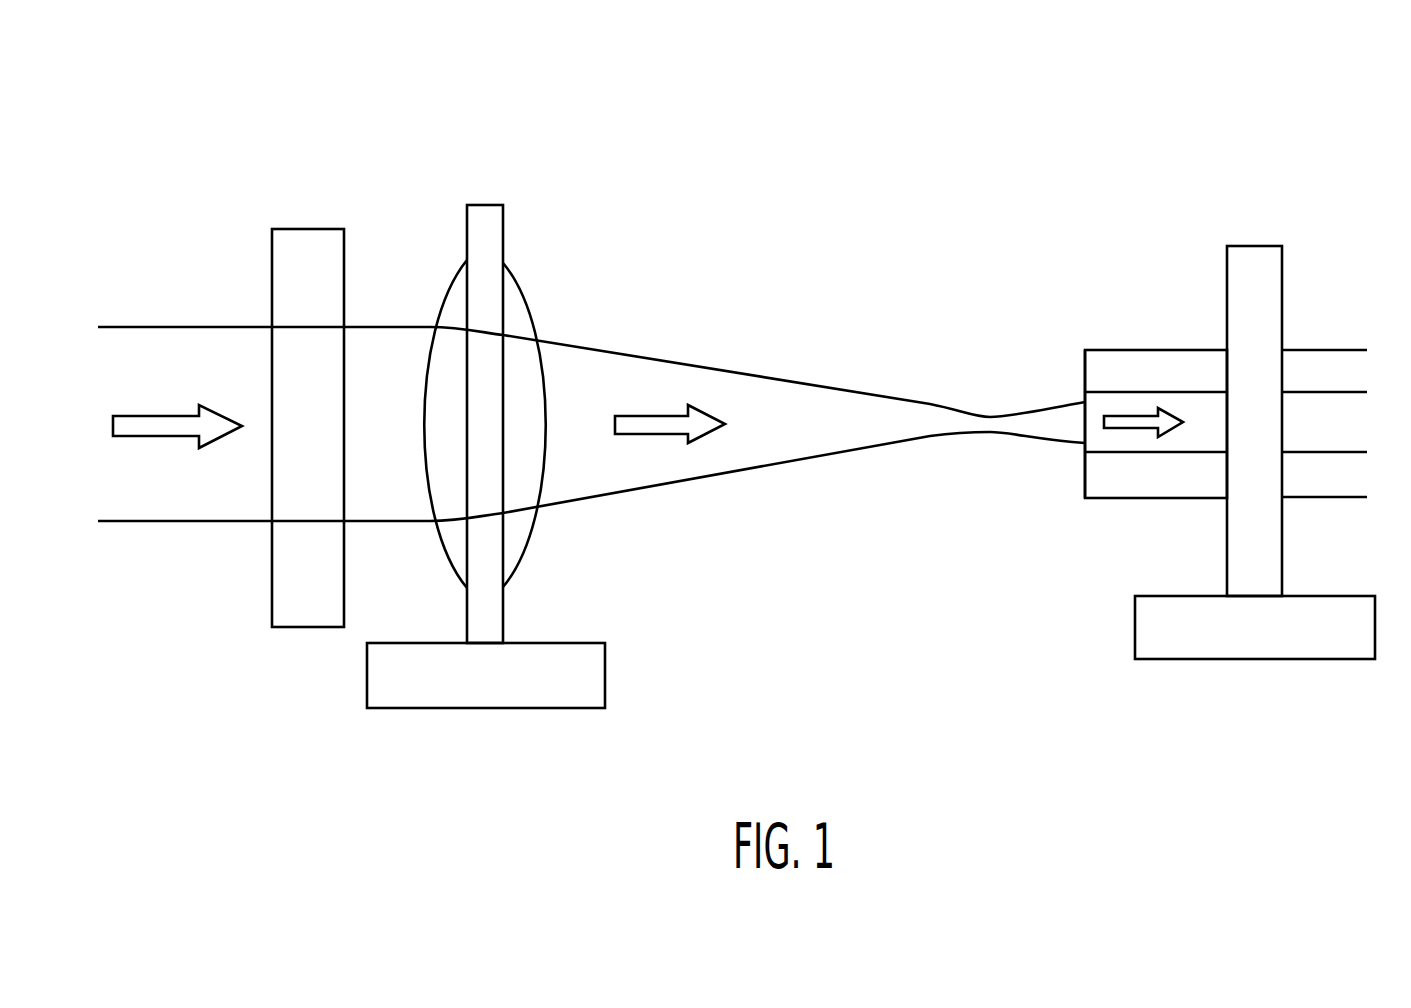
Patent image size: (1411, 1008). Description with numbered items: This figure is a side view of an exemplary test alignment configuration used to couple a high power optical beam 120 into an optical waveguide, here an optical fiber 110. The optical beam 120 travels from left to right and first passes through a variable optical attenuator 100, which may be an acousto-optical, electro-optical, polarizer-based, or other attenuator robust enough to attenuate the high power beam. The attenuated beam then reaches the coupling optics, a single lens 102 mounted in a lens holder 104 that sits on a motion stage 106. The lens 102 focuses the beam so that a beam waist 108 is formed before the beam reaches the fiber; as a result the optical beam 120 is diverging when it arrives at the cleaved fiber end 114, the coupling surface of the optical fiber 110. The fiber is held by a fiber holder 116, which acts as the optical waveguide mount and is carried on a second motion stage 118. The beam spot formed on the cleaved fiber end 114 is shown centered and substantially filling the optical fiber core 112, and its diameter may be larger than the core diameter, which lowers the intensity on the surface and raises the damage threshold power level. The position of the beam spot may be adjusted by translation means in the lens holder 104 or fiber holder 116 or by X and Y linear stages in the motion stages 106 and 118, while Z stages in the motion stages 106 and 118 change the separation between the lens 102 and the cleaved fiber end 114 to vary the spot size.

The variable optical attenuator 100 is at (271, 259).
The lens 102 is at (520, 293).
The lens holder 104 is at (477, 205).
The motion stage 106 is at (607, 673).
The beam waist 108 is at (1015, 447).
The optical fiber 110 is at (1113, 350).
The optical fiber core 112 is at (1327, 408).
The cleaved fiber end 114 is at (1085, 397).
The fiber holder 116 is at (1243, 246).
The motion stage 118 is at (1135, 638).
The optical beam 120 is at (211, 487).